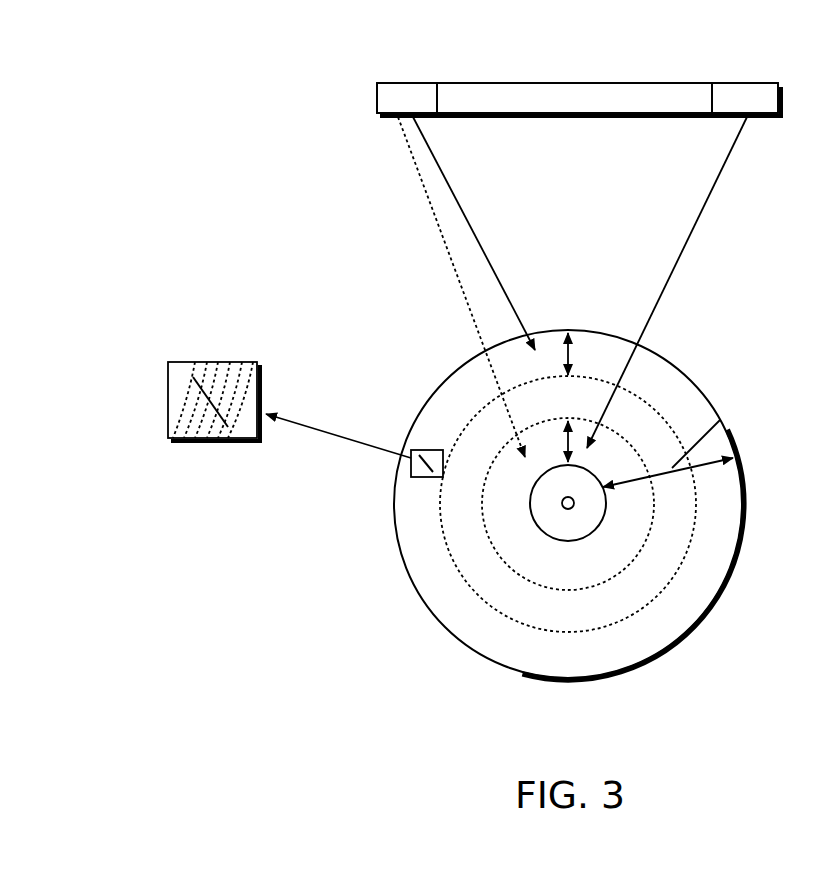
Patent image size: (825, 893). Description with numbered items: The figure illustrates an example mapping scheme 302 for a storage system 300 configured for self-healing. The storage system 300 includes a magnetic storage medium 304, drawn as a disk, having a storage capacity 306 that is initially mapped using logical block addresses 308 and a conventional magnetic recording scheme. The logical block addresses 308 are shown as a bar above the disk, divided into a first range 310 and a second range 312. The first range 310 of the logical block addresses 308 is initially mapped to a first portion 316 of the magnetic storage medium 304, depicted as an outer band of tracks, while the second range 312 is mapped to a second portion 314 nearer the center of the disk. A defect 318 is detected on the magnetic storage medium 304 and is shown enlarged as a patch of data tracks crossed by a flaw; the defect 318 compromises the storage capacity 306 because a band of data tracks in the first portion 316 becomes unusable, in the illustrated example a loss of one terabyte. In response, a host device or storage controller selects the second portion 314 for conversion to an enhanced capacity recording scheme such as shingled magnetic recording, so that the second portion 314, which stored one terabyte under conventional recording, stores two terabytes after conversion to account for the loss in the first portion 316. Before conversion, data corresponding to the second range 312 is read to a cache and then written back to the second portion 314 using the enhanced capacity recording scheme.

The storage system 300 is at (150, 233).
The mapping scheme 302 is at (246, 70).
The magnetic storage medium 304 is at (440, 383).
The storage capacity 306 is at (722, 419).
The logical block addresses 308 is at (535, 83).
The first range 310 is at (423, 83).
The second range 312 is at (729, 83).
The second portion 314 is at (566, 443).
The first portion 316 is at (567, 352).
The defect 318 is at (198, 362).